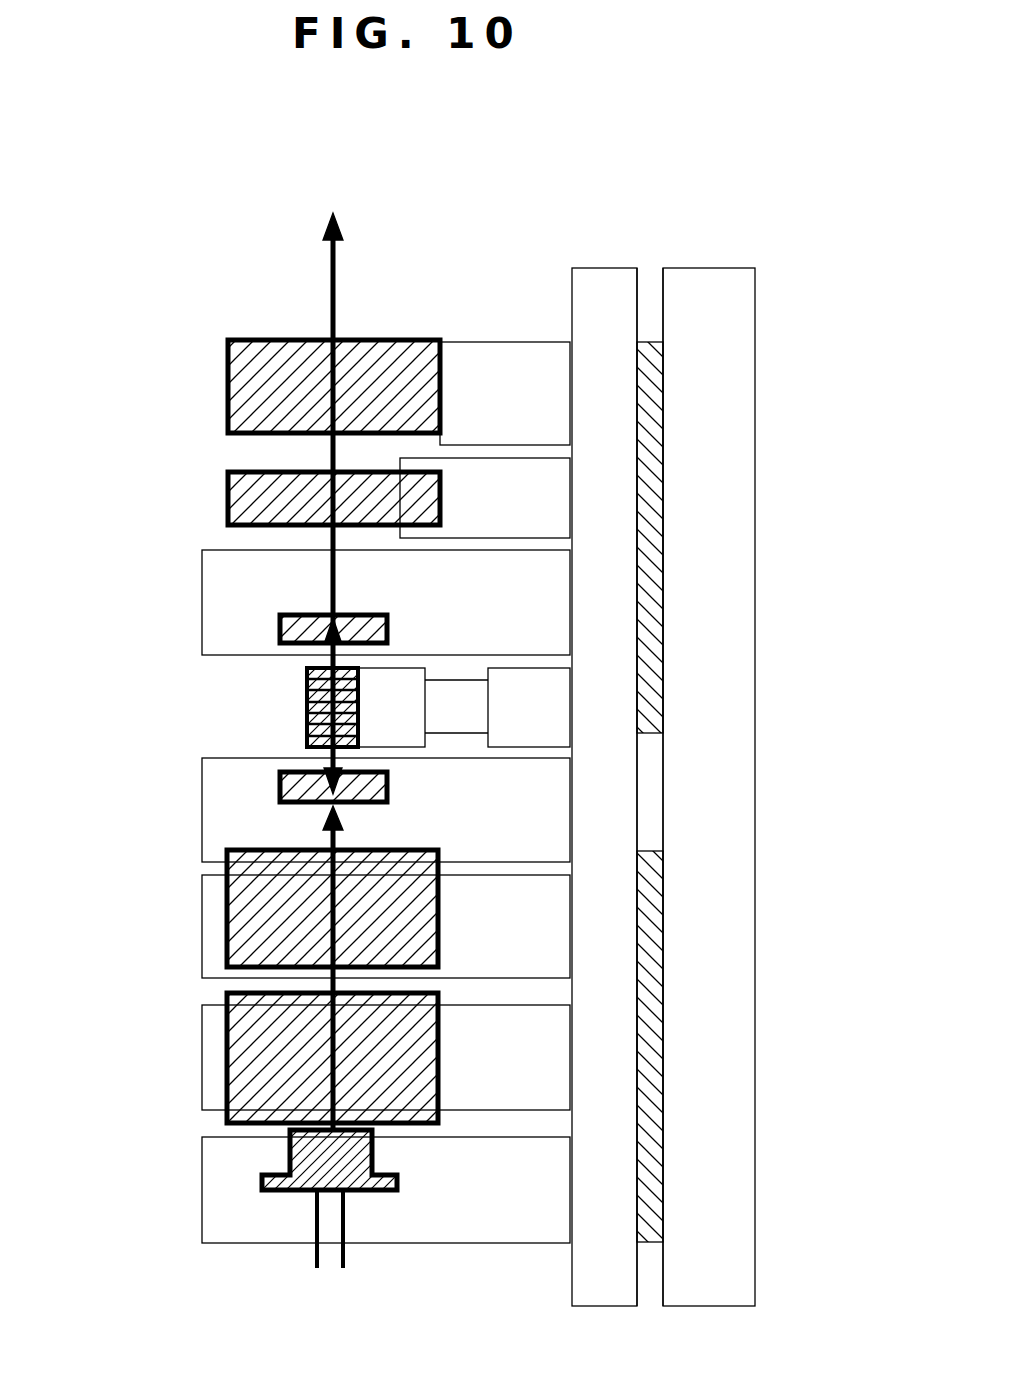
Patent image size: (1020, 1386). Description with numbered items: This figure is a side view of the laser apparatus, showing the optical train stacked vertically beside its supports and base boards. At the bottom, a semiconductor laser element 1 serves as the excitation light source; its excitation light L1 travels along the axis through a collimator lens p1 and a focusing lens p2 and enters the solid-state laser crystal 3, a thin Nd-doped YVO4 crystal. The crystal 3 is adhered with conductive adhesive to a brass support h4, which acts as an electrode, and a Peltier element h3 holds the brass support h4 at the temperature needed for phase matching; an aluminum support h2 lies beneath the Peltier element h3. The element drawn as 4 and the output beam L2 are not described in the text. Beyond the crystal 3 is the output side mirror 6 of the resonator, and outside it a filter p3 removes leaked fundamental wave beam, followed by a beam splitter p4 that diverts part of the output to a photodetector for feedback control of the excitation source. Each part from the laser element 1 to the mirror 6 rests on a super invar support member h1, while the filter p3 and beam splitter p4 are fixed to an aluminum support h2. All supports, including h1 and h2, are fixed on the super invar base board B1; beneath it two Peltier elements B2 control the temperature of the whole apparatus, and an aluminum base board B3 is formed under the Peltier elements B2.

The semiconductor laser element 1 is at (297, 1158).
The solid-state laser crystal 3 is at (280, 783).
The beam splitter / prism 4 is at (307, 715).
The output side mirror 6 is at (280, 629).
The collimator lens p1 is at (240, 1055).
The focusing lens p2 is at (240, 918).
The filter p3 is at (228, 494).
The beam splitter p4 is at (228, 387).
The excitation light L1 is at (327, 838).
The outgoing light beam L2 is at (330, 313).
The base board B1 is at (572, 305).
The Peltier element B2 is at (640, 355).
The aluminum base board B3 is at (705, 275).
The support member h1 is at (274, 600).
The support h2 is at (530, 409).
The Peltier element h3 is at (457, 688).
The brass support h4 is at (407, 677).